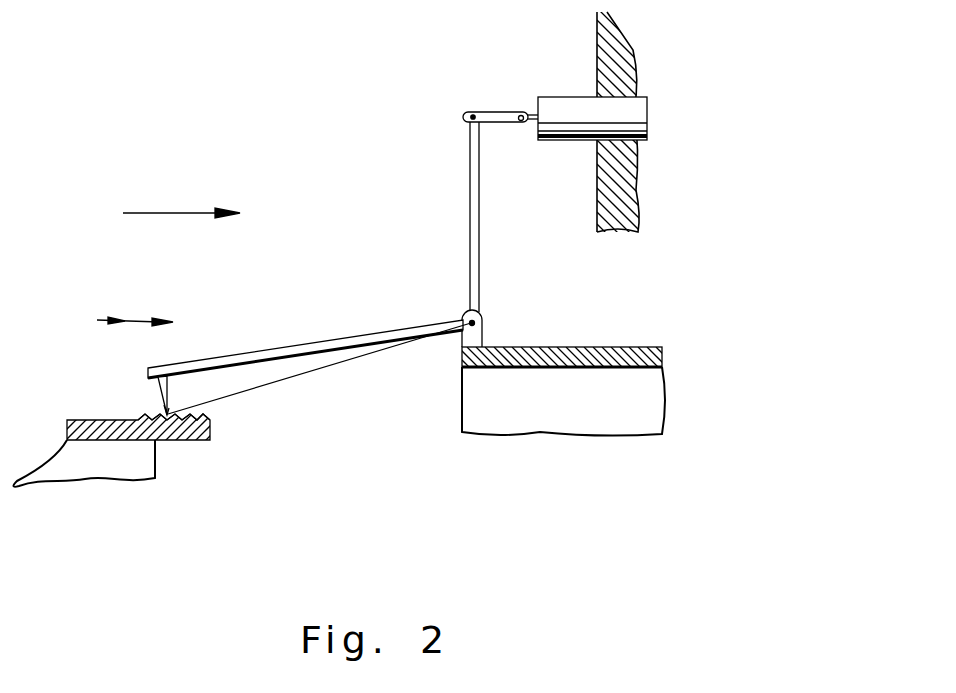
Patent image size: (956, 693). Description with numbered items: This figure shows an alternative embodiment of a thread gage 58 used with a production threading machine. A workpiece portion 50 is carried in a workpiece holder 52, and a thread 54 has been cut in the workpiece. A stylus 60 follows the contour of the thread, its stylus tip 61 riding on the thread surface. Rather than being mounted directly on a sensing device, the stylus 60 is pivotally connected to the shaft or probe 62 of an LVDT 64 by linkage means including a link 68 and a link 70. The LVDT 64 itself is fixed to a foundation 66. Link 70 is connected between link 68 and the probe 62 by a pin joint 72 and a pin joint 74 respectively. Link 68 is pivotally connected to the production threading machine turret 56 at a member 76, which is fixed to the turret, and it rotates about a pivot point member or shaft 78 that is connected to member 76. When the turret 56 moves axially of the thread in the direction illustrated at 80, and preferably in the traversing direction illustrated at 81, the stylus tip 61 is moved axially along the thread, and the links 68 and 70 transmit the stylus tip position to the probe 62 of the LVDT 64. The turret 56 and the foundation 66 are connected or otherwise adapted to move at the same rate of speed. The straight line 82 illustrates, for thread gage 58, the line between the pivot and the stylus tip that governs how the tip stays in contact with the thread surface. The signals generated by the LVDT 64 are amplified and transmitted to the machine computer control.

The workpiece portion 50 is at (212, 436).
The workpiece holder 52 is at (158, 466).
The thread 54 is at (203, 415).
The production threading machine turret 56 is at (665, 397).
The thread gage 58 is at (297, 240).
The stylus 60 is at (163, 403).
The stylus tip 61 is at (163, 410).
The shaft or probe 62 is at (530, 112).
The LVDT 64 is at (572, 97).
The foundation 66 is at (627, 60).
The link 68 is at (470, 207).
The link 70 is at (498, 124).
The pin joint 72 is at (469, 114).
The pin joint 74 is at (523, 124).
The member 76 is at (481, 314).
The pivot point member or shaft 78 is at (476, 323).
The direction of turret movement 80 is at (136, 318).
The preferred traversing direction 81 is at (143, 210).
The straight line 82 is at (350, 361).